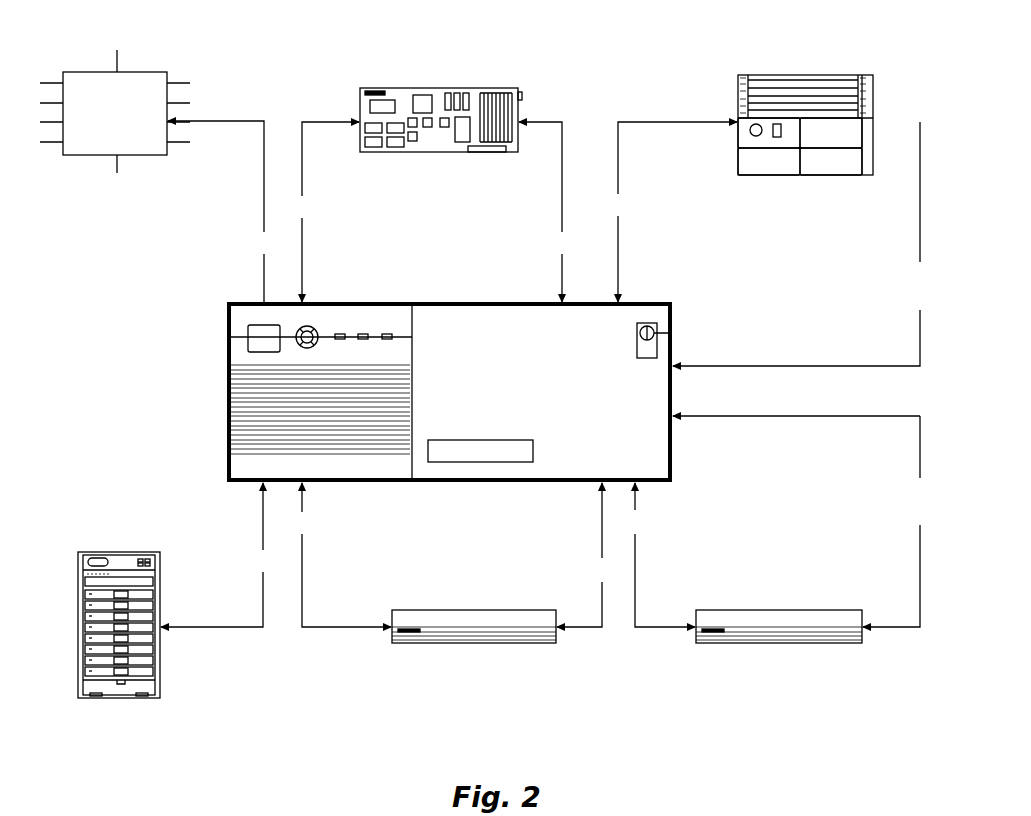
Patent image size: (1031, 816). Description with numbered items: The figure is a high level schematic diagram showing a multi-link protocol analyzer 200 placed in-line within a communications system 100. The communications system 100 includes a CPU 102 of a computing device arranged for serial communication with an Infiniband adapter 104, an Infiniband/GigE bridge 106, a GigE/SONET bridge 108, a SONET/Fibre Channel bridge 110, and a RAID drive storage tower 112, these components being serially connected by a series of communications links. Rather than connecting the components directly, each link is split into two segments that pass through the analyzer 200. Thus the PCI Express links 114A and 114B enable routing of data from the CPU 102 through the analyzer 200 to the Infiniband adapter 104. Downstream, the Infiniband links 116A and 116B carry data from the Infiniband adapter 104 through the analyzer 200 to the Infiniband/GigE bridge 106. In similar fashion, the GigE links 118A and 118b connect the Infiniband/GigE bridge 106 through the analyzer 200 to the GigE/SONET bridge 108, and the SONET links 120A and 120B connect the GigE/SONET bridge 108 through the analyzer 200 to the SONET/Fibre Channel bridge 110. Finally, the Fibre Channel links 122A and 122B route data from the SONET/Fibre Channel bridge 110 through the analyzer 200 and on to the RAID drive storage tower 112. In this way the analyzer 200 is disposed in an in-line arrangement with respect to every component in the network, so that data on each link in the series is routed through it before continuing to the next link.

The communications system 100 is at (637, 48).
The CPU 102 is at (97, 152).
The Infiniband adapter 104 is at (518, 105).
The Infiniband/GigE bridge 106 is at (873, 104).
The GigE/SONET bridge 108 is at (845, 643).
The SONET/Fibre Channel bridge 110 is at (530, 643).
The RAID drive storage tower 112 is at (160, 672).
The PCI Express link 114A is at (264, 184).
The PCI Express link 114B is at (302, 266).
The Infiniband link 116A is at (562, 184).
The Infiniband link 116B is at (618, 266).
The GigE link 118A is at (920, 332).
The GigE link 118b is at (920, 441).
The SONET link 120A is at (635, 574).
The SONET link 120B is at (602, 518).
The Fibre Channel link 122A is at (302, 574).
The Fibre Channel link 122B is at (263, 515).
The multi-link protocol analyzer 200 is at (205, 412).